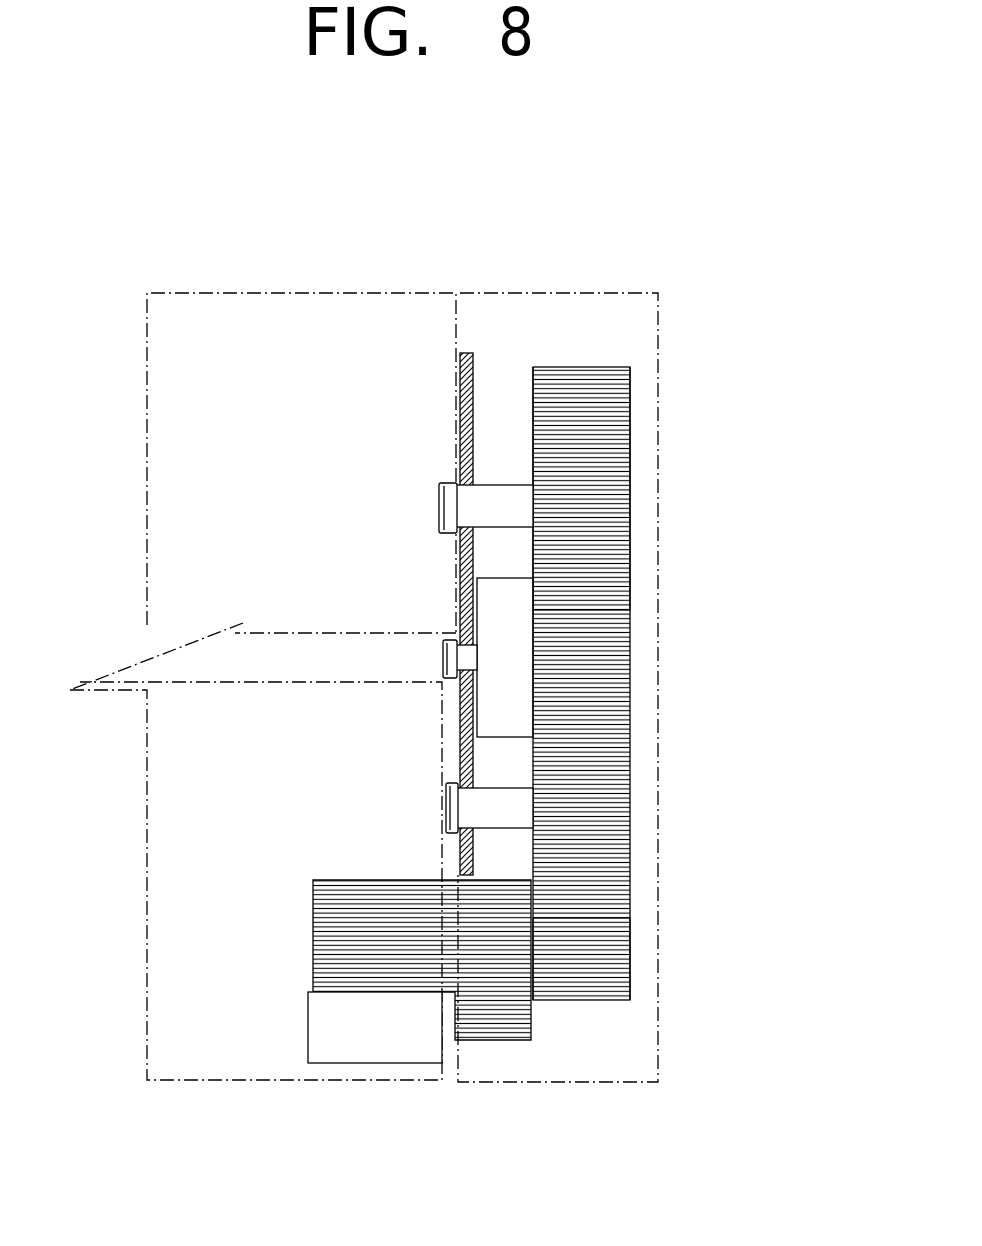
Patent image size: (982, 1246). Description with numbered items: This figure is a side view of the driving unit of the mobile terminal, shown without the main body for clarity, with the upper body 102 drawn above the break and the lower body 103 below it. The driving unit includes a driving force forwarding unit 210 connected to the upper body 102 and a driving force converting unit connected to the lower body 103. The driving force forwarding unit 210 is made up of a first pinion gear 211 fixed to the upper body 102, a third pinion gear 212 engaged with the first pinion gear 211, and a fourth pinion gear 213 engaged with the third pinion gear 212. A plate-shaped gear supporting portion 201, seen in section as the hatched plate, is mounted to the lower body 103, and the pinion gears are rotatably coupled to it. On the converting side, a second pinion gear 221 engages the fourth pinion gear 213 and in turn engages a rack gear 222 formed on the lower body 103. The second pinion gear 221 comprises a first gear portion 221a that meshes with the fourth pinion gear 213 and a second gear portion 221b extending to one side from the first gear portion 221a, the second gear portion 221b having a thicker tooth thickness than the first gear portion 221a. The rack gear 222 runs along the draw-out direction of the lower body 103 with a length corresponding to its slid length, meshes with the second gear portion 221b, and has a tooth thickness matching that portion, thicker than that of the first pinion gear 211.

The upper body 102 is at (235, 300).
The lower body 103 is at (222, 1050).
The gear supporting portion 201 is at (473, 392).
The driving force forwarding unit 210 is at (652, 683).
The first pinion gear 211 is at (630, 544).
The third pinion gear 212 is at (630, 655).
The fourth pinion gear 213 is at (644, 809).
The second pinion gear 221 is at (578, 963).
The first gear portion 221a is at (630, 955).
The second gear portion 221b is at (532, 1017).
The rack gear 222 is at (373, 1050).